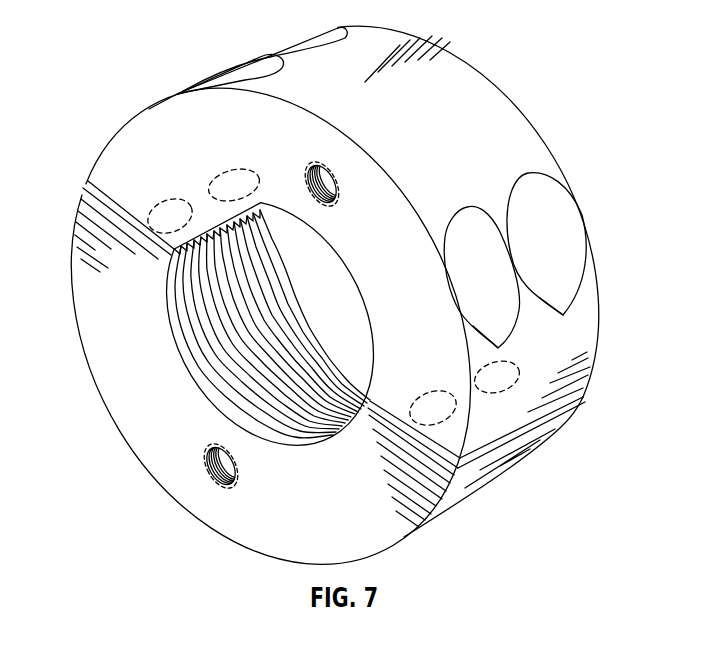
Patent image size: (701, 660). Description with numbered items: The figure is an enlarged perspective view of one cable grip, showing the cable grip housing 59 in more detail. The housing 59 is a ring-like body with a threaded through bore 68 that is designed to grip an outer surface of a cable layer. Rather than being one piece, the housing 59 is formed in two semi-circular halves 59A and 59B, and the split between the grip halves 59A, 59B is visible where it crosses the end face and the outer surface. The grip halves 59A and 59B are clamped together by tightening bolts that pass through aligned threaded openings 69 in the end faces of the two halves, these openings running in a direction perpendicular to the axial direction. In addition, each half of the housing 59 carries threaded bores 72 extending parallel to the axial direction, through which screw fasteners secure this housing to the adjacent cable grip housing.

The cable grip housing 59 is at (590, 181).
The grip half 59A is at (479, 84).
The grip half 59B is at (536, 449).
The threaded through bore 68 is at (222, 362).
The threaded openings 69 is at (88, 180).
The threaded bores 72 is at (311, 178).